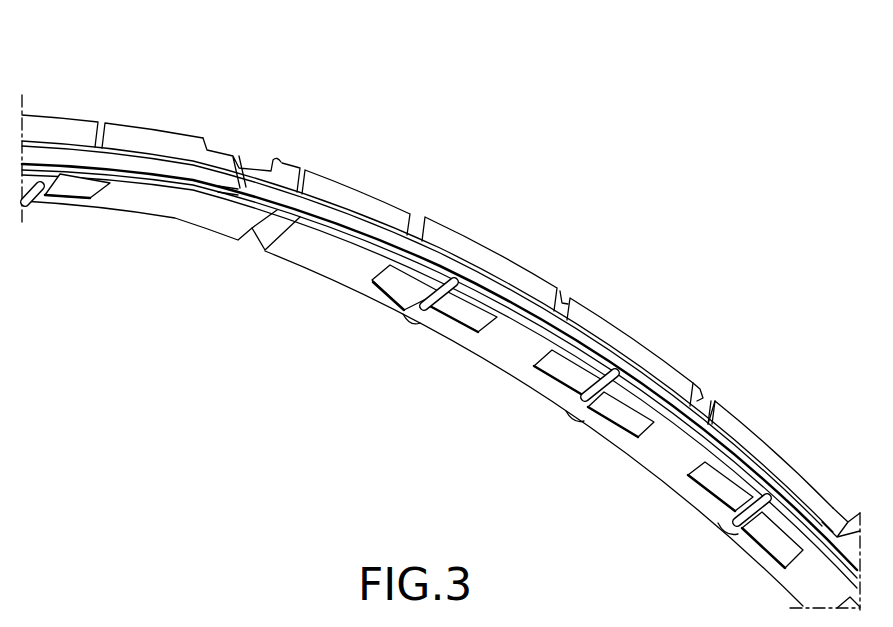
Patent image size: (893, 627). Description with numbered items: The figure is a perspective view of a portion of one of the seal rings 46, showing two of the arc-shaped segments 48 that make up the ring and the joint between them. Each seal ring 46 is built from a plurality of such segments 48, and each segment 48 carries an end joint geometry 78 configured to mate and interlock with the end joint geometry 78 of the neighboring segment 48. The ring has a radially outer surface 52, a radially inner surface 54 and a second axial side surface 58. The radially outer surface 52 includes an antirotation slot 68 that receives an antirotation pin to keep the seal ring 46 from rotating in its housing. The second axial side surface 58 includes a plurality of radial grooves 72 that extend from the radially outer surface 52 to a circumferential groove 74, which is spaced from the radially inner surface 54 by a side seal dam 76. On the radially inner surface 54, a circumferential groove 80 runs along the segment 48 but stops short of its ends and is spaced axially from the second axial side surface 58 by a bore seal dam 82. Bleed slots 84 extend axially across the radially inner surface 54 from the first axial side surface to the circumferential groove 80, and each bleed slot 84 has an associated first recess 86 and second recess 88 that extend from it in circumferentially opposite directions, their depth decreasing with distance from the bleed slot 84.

The seal ring 46 is at (408, 115).
The arc-shaped segment 48 is at (122, 98).
The radially outer surface 52 is at (318, 160).
The radially inner surface 54 is at (330, 262).
The second axial side surface 58 is at (620, 330).
The antirotation slot 68 is at (712, 388).
The radial groove 72 is at (560, 297).
The circumferential groove 74 is at (512, 290).
The side seal dam 76 is at (480, 283).
The end joint geometry 78 is at (227, 128).
The circumferential groove 80 is at (405, 237).
The bore seal dam 82 is at (348, 212).
The bleed slot 84 is at (422, 306).
The first recess 86 is at (400, 284).
The second recess 88 is at (465, 318).